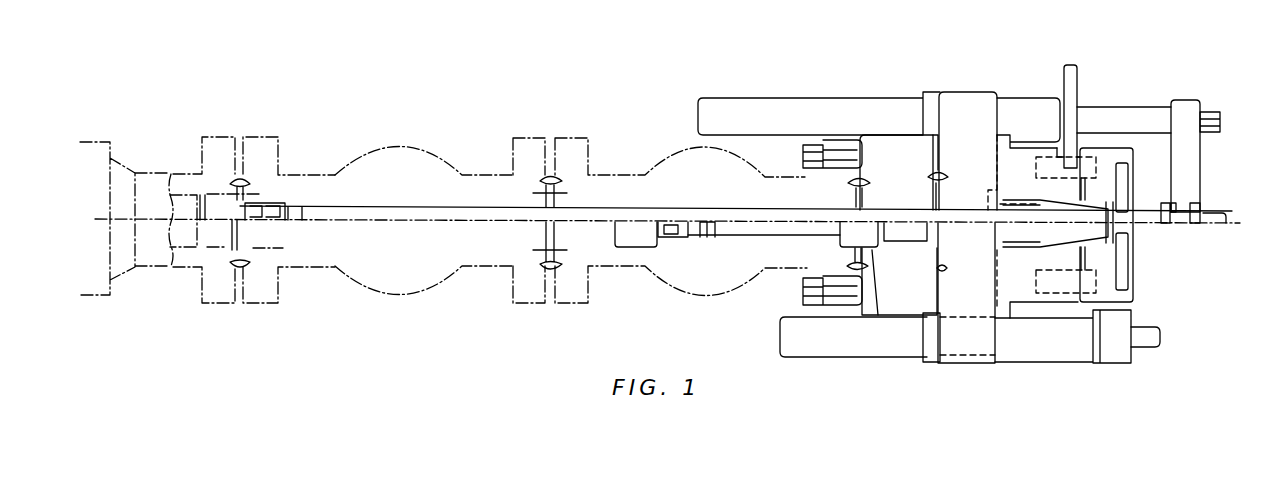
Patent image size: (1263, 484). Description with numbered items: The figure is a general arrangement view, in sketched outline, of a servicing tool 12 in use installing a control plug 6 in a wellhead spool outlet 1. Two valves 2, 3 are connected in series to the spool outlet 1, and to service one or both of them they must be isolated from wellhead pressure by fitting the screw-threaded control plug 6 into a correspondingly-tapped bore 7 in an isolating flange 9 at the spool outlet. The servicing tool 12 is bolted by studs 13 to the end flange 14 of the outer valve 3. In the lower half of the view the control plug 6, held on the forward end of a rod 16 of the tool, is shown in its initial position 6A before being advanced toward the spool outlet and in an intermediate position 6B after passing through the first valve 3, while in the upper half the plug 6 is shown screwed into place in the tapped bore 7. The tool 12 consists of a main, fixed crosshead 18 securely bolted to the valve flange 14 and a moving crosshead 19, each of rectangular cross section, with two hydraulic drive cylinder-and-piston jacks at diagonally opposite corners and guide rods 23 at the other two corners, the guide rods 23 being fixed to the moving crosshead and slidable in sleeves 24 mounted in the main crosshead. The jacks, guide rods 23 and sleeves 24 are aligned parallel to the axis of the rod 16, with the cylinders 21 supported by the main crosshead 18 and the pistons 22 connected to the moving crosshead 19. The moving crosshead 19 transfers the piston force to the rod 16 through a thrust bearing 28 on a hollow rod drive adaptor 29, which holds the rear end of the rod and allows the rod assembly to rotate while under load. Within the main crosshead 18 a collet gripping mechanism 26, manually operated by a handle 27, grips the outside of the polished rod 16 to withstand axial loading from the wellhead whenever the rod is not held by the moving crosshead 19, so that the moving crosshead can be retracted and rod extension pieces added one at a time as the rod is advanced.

The wellhead spool outlet 1 is at (116, 136).
The valve 2 is at (411, 177).
The valve 3 is at (676, 166).
The control plug 6 is at (223, 207).
The initial position of control plug 6A is at (868, 250).
The intermediate position of control plug 6B is at (637, 242).
The tapped bore 7 is at (187, 230).
The isolating flange 9 is at (207, 270).
The servicing tool 12 is at (891, 84).
The studs 13 is at (803, 157).
The end flange 14 is at (837, 305).
The rod 16 is at (410, 207).
The main crosshead 18 is at (965, 120).
The moving crosshead 19 is at (1195, 148).
The hydraulic drive cylinder 21 is at (1085, 353).
The piston 22 is at (1140, 345).
The guide rods 23 is at (1112, 115).
The sleeves 24 is at (1018, 117).
The collet gripping mechanism 26 is at (1061, 250).
The handle 27 is at (1064, 65).
The thrust bearing 28 is at (1185, 212).
The rod drive adaptor 29 is at (1230, 168).